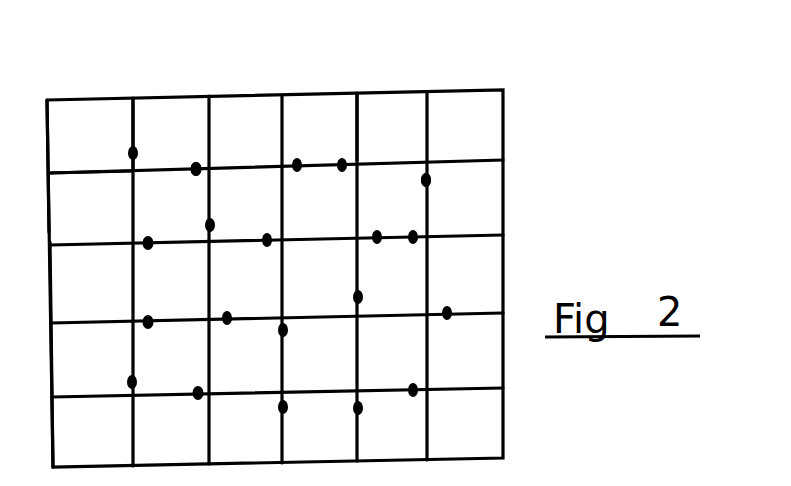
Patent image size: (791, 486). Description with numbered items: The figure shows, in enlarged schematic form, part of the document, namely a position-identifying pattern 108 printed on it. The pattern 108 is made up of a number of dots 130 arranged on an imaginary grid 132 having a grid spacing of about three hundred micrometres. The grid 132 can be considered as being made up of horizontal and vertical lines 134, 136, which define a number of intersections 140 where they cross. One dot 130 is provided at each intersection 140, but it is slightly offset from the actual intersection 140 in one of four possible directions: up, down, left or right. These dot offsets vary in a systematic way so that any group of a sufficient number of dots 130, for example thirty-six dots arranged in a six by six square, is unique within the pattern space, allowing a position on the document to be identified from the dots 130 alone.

The position-identifying pattern 108 is at (455, 211).
The dot 130 is at (431, 180).
The imaginary grid 132 is at (354, 128).
The horizontal line 134 is at (84, 170).
The vertical line 136 is at (137, 120).
The intersection 140 is at (215, 160).